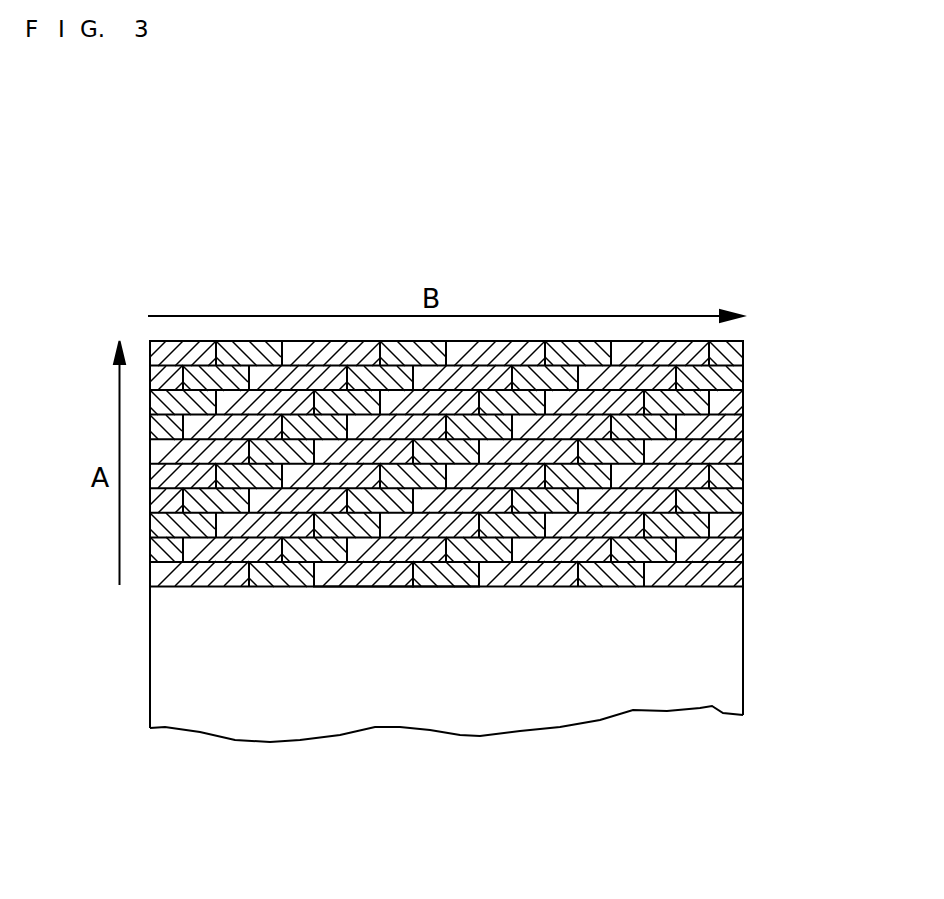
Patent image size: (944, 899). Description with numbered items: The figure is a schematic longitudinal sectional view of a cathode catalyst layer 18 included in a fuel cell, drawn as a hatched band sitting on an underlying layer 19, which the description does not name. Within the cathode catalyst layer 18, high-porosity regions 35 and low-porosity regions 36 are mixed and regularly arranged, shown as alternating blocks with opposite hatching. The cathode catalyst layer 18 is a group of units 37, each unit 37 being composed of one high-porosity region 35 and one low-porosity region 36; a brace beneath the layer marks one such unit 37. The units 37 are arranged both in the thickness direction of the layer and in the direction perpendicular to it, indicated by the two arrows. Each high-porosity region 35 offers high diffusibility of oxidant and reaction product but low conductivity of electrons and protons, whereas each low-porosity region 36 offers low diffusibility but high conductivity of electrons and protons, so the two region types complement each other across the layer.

The cathode catalyst layer 18 is at (783, 341).
The substrate 19 is at (720, 642).
The high-porosity region 35 is at (450, 577).
The low-porosity region 36 is at (371, 577).
The unit 37 is at (396, 708).